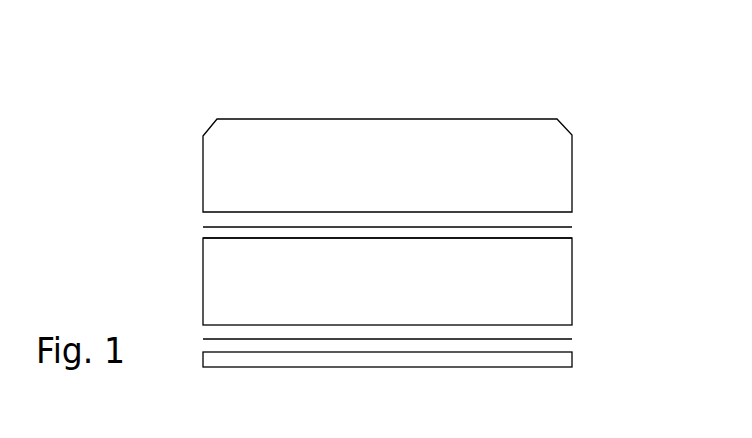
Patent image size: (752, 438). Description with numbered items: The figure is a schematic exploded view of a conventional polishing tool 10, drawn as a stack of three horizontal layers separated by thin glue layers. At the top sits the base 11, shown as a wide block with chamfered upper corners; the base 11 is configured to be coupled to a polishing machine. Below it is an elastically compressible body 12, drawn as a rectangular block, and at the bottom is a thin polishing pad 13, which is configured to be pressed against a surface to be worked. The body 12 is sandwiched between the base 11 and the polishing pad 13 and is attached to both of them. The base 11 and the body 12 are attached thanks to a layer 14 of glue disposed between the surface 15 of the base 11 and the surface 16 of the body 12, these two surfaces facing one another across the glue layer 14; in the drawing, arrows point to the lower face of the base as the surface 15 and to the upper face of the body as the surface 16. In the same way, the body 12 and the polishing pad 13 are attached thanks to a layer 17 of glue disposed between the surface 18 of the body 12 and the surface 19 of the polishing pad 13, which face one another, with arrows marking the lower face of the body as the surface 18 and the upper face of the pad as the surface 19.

The polishing tool 10 is at (156, 74).
The base 11 is at (401, 177).
The elastically compressible body 12 is at (402, 293).
The polishing pad 13 is at (407, 358).
The layer of glue 14 is at (572, 227).
The surface of the base 15 is at (274, 223).
The surface of the body 16 is at (305, 227).
The layer of glue 17 is at (572, 339).
The surface of the body 18 is at (281, 336).
The surface of the polishing pad 19 is at (323, 341).